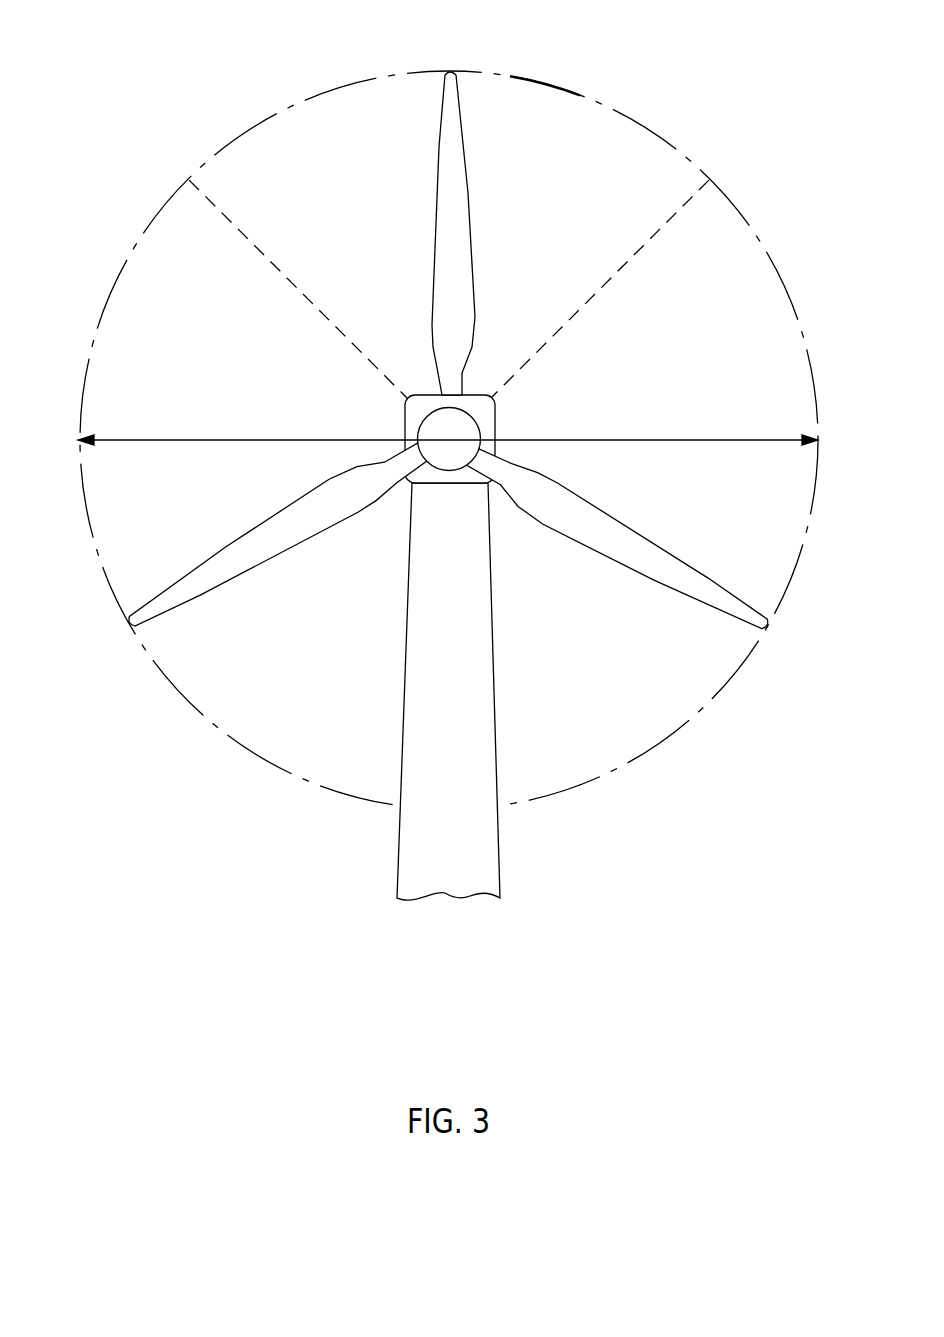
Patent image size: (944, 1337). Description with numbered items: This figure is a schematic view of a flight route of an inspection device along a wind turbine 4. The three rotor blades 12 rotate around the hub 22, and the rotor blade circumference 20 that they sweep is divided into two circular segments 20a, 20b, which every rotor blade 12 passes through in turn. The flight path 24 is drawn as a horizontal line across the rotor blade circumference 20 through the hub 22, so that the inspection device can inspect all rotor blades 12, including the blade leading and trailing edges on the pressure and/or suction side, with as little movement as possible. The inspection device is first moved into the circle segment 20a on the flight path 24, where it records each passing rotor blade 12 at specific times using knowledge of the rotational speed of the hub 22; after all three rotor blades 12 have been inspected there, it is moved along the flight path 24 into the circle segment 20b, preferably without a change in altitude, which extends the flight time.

The wind turbine 4 is at (480, 693).
The rotor blade 12 is at (446, 226).
The rotor blade circumference 20 is at (553, 85).
The circle segment 20a is at (755, 302).
The circle segment 20b is at (142, 300).
The hub 22 is at (458, 432).
The flight path 24 is at (657, 438).